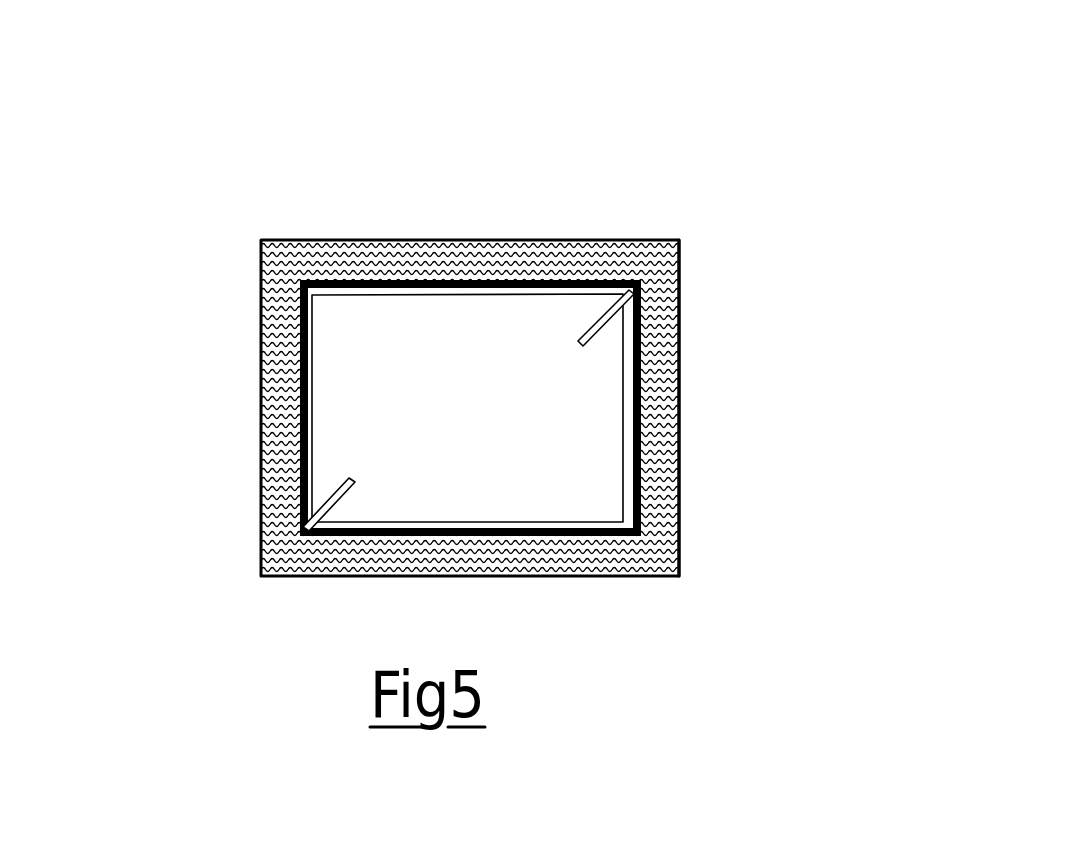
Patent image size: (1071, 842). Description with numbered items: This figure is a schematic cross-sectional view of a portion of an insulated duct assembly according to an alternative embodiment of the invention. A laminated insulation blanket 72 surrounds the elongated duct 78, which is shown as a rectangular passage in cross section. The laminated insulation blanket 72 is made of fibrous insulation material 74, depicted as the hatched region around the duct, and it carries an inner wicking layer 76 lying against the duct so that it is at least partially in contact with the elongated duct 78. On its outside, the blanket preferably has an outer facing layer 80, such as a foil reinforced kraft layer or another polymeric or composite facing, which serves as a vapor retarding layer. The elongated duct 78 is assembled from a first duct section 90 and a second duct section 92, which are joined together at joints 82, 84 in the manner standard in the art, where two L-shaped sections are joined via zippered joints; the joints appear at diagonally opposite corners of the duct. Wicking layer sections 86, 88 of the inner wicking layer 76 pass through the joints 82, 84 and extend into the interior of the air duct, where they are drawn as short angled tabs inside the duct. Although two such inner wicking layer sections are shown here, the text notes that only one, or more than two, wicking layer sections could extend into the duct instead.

The laminated insulation blanket 72 is at (708, 177).
The fibrous insulation material 74 is at (277, 340).
The inner wicking layer 76 is at (647, 440).
The elongated duct 78 is at (627, 383).
The outer facing layer 80 is at (678, 330).
The joint 82 is at (641, 290).
The joint 84 is at (305, 530).
The wicking layer section 86 is at (342, 483).
The wicking layer section 88 is at (586, 340).
The first duct section 90 is at (613, 533).
The second duct section 92 is at (347, 280).